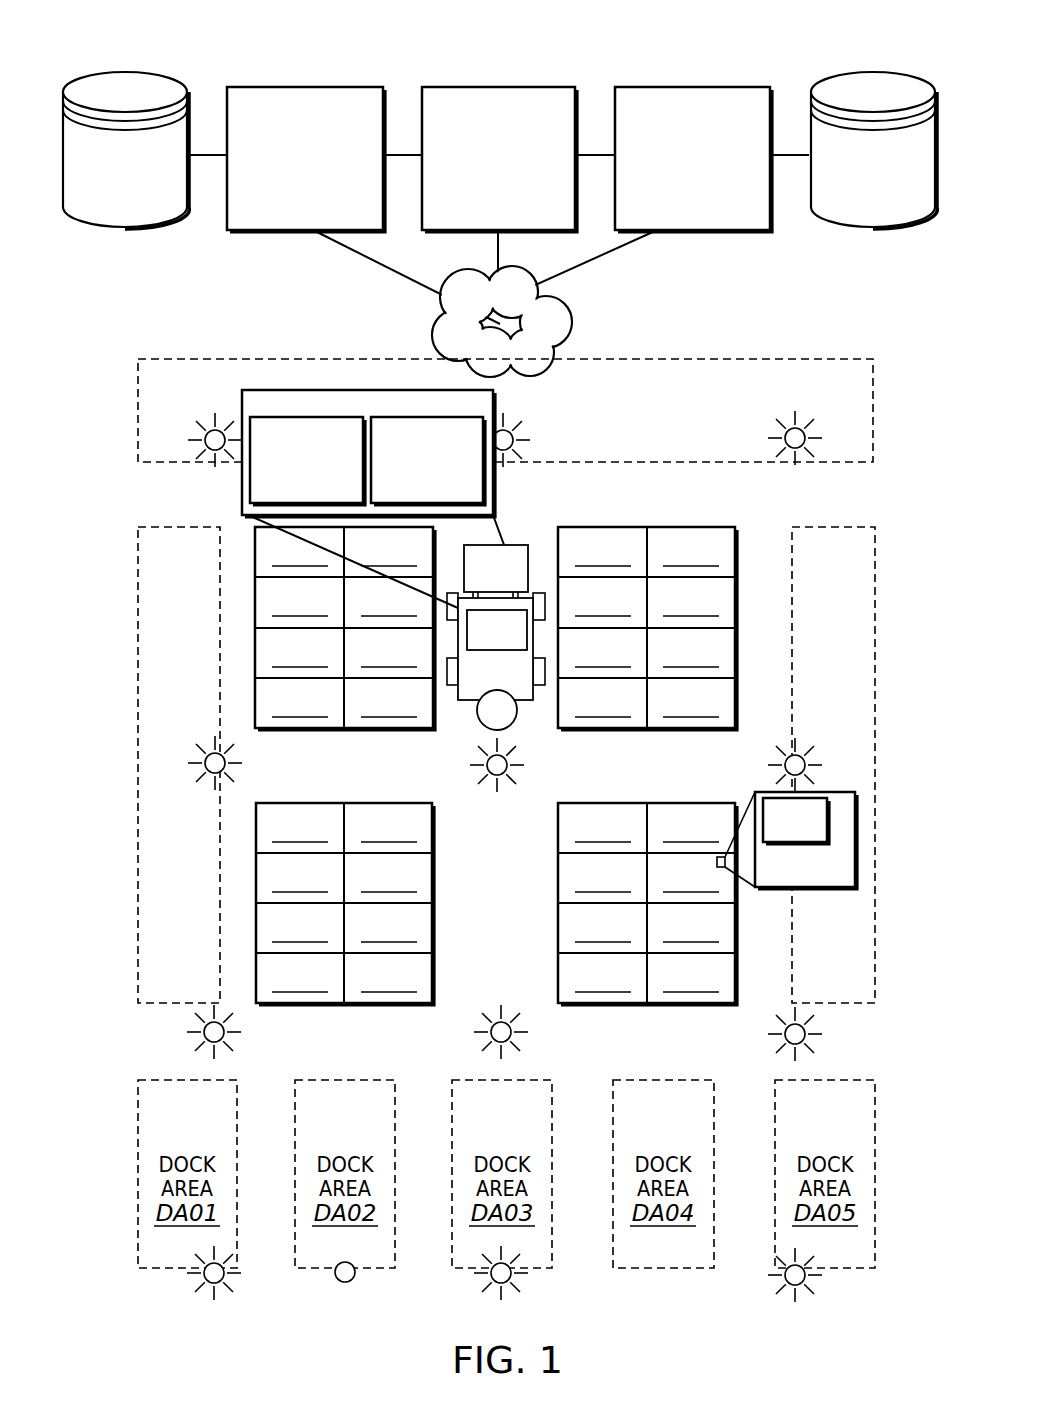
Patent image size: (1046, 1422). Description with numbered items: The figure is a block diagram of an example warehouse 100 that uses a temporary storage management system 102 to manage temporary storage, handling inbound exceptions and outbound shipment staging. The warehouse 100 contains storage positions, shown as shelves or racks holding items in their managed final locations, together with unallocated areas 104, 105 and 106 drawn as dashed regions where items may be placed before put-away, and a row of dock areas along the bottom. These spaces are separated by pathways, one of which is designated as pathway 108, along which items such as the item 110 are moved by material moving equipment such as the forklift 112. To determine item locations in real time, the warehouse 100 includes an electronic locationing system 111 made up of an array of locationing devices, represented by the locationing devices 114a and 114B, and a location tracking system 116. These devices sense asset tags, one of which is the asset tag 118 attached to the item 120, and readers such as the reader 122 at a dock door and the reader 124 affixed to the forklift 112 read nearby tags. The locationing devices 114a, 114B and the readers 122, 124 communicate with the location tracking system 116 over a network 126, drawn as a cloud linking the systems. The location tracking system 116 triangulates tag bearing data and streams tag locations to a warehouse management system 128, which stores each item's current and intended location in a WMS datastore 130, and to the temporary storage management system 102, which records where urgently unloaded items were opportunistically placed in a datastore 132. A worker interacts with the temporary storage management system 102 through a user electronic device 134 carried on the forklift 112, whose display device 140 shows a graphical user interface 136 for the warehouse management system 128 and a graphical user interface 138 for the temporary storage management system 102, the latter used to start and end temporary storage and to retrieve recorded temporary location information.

The warehouse 100 is at (180, 50).
The temporary storage management system 102 is at (692, 86).
The unallocated area 104 is at (180, 526).
The unallocated area 105 is at (190, 358).
The unallocated area 106 is at (833, 526).
The pathway 108 is at (770, 514).
The item 110 is at (526, 608).
The electronic locationing system 111 is at (851, 63).
The forklift 112 is at (496, 622).
The locationing device 114a is at (793, 424).
The locationing device 114B is at (212, 1280).
The location tracking system 116 is at (498, 86).
The asset tag 118 is at (774, 834).
The item 120 is at (830, 840).
The reader 122 is at (345, 1283).
The reader 124 is at (477, 718).
The network 126 is at (573, 326).
The warehouse management system 128 is at (305, 86).
The WMS datastore 130 is at (125, 228).
The datastore 132 is at (873, 228).
The user electronic device 134 is at (476, 644).
The graphical user interface 136 is at (285, 475).
The graphical user interface 138 is at (405, 475).
The display device 140 is at (368, 414).